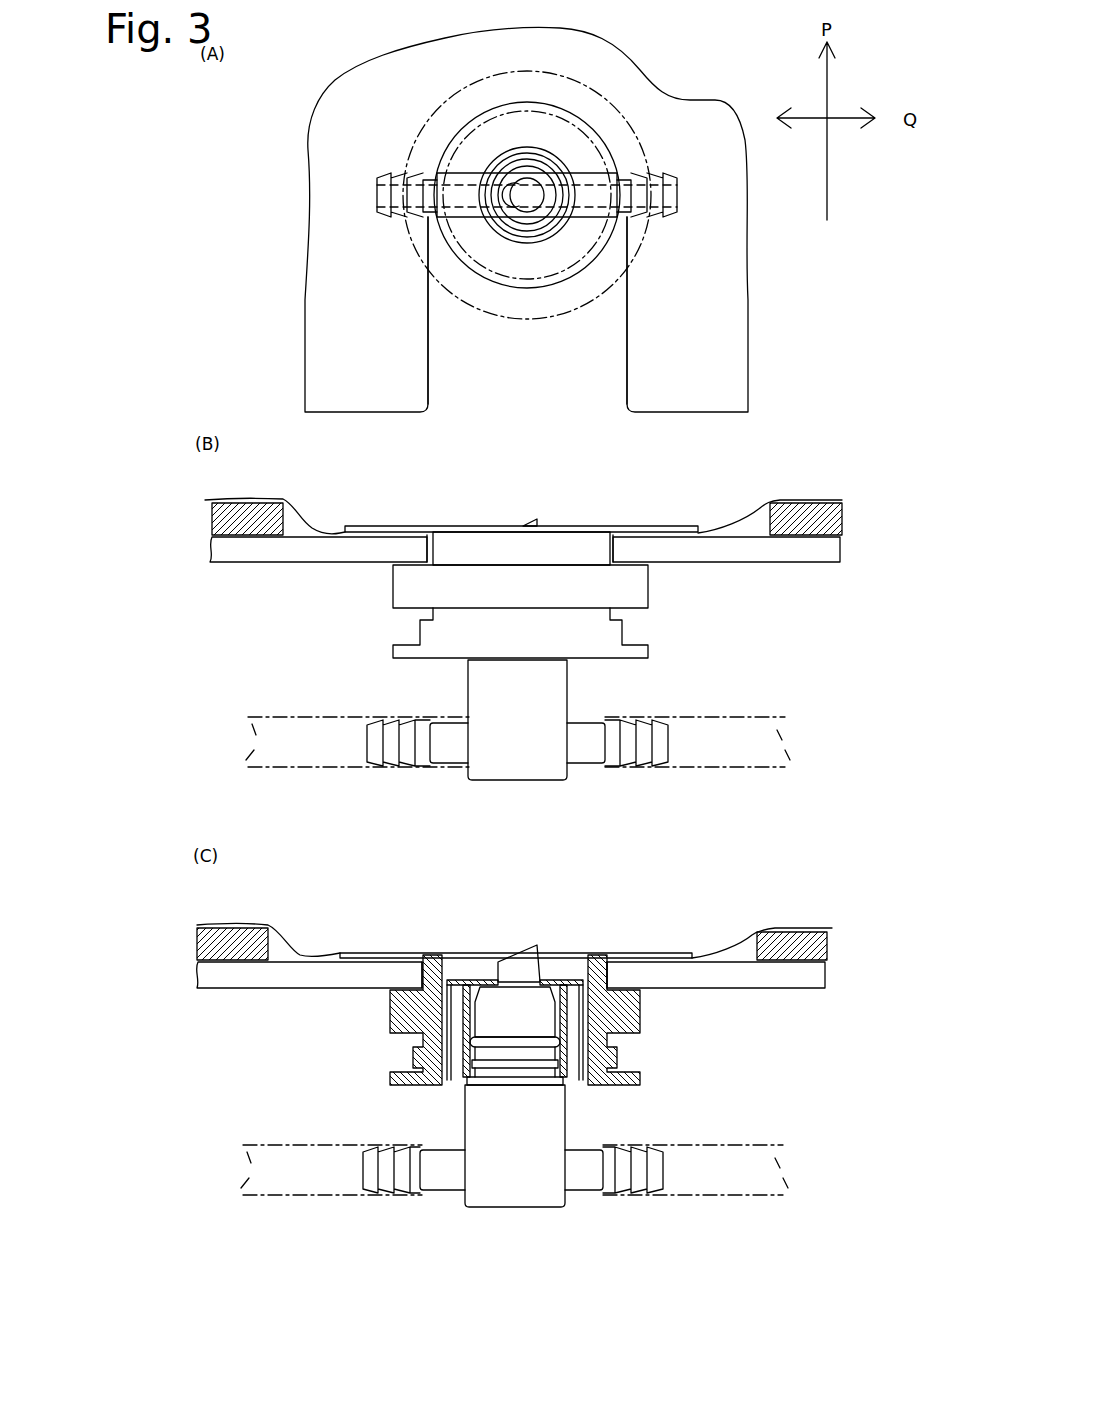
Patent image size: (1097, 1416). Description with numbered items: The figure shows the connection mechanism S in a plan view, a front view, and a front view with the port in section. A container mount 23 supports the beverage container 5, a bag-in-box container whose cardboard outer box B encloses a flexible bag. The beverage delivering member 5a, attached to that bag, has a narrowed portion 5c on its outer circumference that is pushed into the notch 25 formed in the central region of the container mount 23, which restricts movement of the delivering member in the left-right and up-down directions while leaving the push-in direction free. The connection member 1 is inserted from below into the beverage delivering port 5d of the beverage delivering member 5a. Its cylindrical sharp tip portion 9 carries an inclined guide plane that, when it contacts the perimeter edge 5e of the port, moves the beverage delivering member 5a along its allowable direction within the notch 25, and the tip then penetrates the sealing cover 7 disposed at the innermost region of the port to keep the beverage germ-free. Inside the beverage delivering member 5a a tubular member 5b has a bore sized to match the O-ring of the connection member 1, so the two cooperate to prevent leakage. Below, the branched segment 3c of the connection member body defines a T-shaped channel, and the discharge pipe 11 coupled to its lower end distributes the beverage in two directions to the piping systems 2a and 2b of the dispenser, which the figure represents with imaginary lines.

The connection member 1 is at (500, 702).
The piping system 2a is at (273, 717).
The piping system 2b is at (737, 717).
The branched segment 3c is at (567, 778).
The beverage container 5 is at (750, 527).
The beverage delivering member 5a is at (482, 313).
The tubular member 5b is at (566, 1087).
The narrowed portion 5c is at (563, 278).
The beverage delivering port 5d is at (465, 1070).
The perimeter edge 5e is at (578, 1083).
The sealing cover 7 is at (553, 980).
The sharp tip portion 9 is at (527, 522).
The discharge pipe 11 is at (590, 723).
The container mount 23 is at (743, 313).
The notch 25 is at (433, 327).
The connection mechanism S is at (650, 505).
The outer box B is at (842, 525).